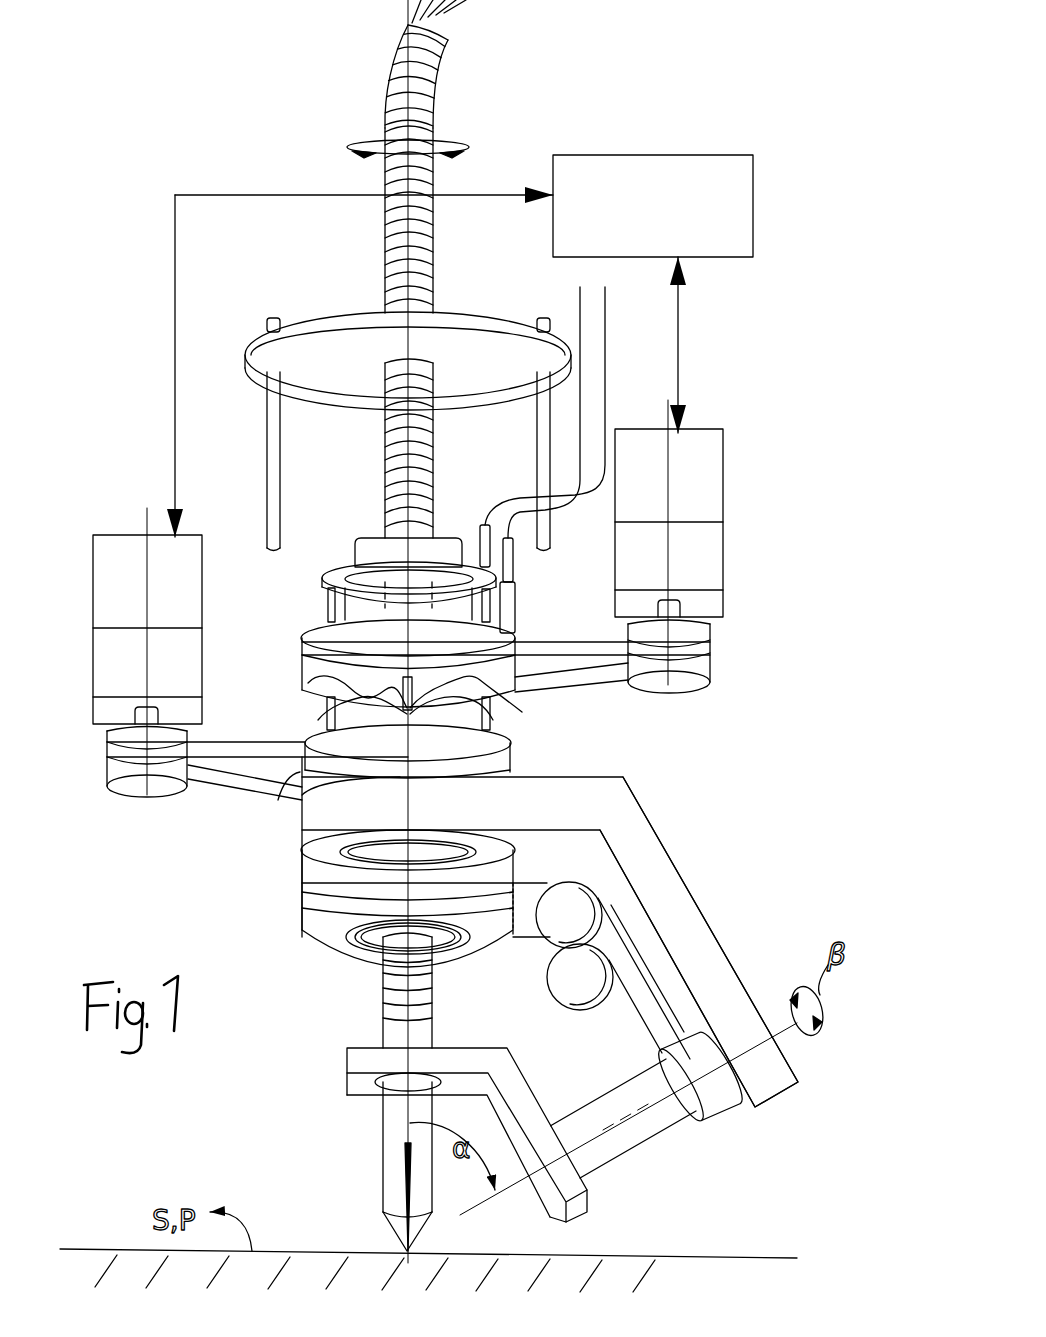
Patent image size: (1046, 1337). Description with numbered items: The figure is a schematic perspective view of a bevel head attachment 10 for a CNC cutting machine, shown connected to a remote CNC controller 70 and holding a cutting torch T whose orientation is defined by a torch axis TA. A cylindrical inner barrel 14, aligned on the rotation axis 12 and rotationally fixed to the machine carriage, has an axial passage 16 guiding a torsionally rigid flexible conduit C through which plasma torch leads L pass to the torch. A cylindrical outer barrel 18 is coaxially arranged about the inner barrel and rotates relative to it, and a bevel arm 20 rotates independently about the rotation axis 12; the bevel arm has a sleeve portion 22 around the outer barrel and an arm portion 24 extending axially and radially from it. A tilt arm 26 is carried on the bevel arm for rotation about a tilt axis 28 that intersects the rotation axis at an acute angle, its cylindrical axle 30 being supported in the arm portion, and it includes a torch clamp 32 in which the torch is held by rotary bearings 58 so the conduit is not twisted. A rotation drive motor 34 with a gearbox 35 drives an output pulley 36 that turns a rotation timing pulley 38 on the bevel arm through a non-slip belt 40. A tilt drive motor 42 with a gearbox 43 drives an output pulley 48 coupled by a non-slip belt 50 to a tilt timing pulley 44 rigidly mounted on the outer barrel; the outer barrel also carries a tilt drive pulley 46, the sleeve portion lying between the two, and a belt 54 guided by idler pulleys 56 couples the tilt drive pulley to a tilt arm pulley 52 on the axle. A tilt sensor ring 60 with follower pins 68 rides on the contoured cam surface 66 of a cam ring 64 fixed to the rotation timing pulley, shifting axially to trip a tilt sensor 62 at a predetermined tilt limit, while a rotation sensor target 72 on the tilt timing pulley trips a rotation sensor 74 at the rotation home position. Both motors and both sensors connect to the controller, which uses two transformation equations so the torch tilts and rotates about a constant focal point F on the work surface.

The bevel head attachment 10 is at (715, 337).
The rotation axis 12 is at (435, 268).
The inner barrel 14 is at (390, 550).
The axial passage 16 is at (395, 525).
The outer barrel 18 is at (335, 692).
The bevel arm 20 is at (640, 800).
The sleeve portion 22 is at (302, 862).
The arm portion 24 is at (723, 945).
The tilt arm 26 is at (542, 1097).
The tilt axis 28 is at (790, 1030).
The axle 30 is at (645, 1145).
The torch clamp 32 is at (372, 1048).
The rotation drive motor 34 is at (120, 535).
The gearbox 35 is at (142, 666).
The output pulley 36 is at (125, 800).
The rotation timing pulley 38 is at (280, 780).
The non-slip belt 40 is at (210, 787).
The tilt drive motor 42 is at (695, 428).
The gearbox 43 is at (723, 548).
The tilt timing pulley 44 is at (302, 650).
The tilt drive pulley 46 is at (302, 935).
The output pulley 48 is at (712, 672).
The non-slip belt 50 is at (600, 680).
The tilt arm pulley 52 is at (710, 1110).
The non-slip belt 54 is at (615, 1010).
The idler pulleys 56 is at (584, 930).
The rotary bearings 58 is at (383, 1090).
The tilt sensor ring 60 is at (322, 578).
The tilt sensor 62 is at (478, 530).
The cam ring 64 is at (520, 745).
The cam surface 66 is at (340, 728).
The follower pins 68 is at (326, 620).
The CNC controller 70 is at (635, 251).
The rotation sensor target 72 is at (515, 600).
The rotation sensor 74 is at (514, 556).
The plasma torch leads L is at (455, 12).
The flexible conduit C is at (385, 115).
The cutting torch T is at (385, 1143).
The torch axis TA is at (405, 1180).
The focal point F is at (412, 1250).